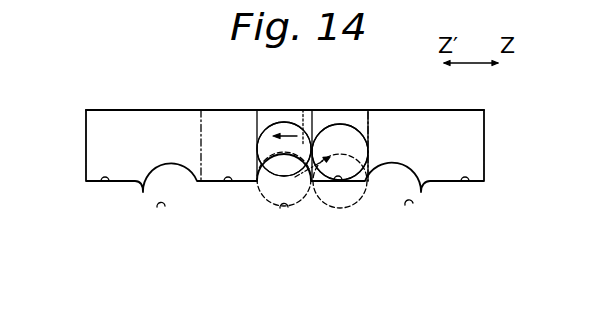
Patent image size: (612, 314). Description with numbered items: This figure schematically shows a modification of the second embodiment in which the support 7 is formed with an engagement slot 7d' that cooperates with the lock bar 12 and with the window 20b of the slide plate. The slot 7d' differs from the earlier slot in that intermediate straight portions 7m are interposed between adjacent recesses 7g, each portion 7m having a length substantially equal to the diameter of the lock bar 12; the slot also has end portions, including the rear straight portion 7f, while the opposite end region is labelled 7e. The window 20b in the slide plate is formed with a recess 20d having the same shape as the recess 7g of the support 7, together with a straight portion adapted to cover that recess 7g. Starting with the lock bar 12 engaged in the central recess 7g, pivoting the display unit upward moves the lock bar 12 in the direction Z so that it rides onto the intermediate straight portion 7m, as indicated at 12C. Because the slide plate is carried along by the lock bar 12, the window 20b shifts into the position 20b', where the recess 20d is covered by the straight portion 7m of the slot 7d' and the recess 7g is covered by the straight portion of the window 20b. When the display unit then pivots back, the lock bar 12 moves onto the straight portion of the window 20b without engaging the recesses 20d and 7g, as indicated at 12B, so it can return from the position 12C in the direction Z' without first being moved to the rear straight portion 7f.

The support 7 is at (285, 151).
The engagement slot 7d' is at (285, 91).
The left end portion of base body 7e is at (101, 184).
The rear straight portion 7f is at (467, 185).
The recess 7g is at (157, 209).
The intermediate straight portion 7m is at (224, 184).
The lock bar 12 is at (305, 110).
The lock bar position 12B is at (263, 133).
The lock bar position 12C is at (352, 127).
The window 20b is at (180, 123).
The window position 20b' is at (410, 131).
The recess 20d is at (355, 200).